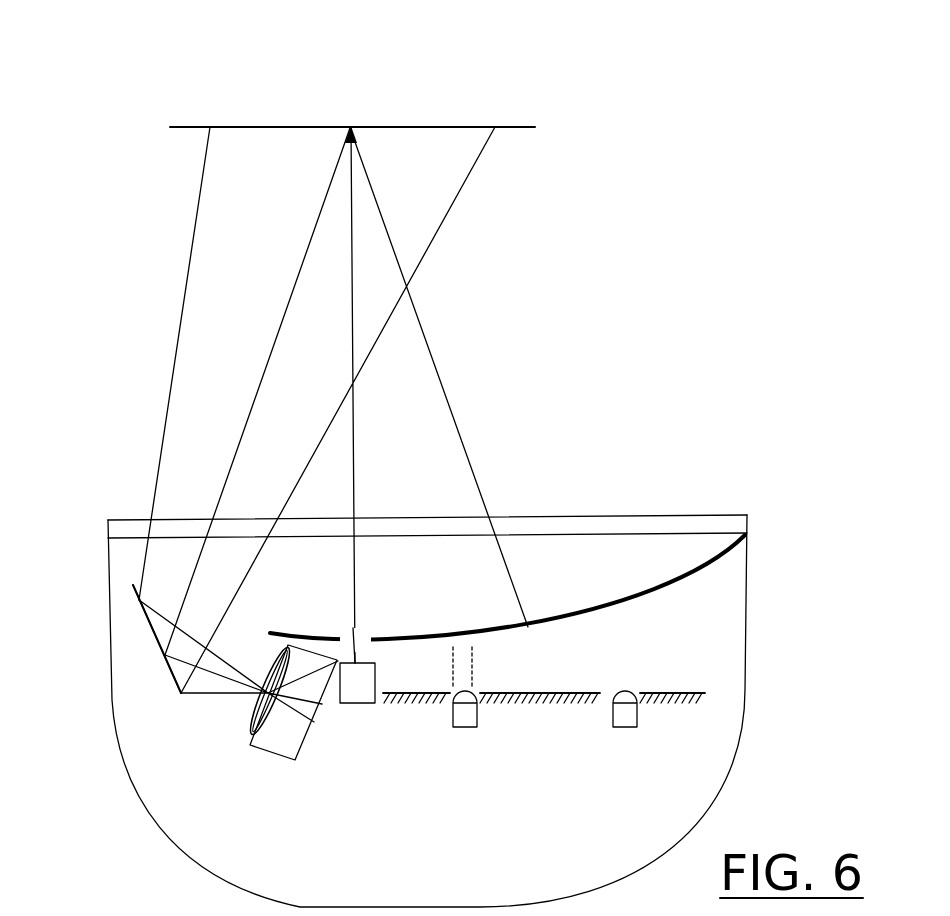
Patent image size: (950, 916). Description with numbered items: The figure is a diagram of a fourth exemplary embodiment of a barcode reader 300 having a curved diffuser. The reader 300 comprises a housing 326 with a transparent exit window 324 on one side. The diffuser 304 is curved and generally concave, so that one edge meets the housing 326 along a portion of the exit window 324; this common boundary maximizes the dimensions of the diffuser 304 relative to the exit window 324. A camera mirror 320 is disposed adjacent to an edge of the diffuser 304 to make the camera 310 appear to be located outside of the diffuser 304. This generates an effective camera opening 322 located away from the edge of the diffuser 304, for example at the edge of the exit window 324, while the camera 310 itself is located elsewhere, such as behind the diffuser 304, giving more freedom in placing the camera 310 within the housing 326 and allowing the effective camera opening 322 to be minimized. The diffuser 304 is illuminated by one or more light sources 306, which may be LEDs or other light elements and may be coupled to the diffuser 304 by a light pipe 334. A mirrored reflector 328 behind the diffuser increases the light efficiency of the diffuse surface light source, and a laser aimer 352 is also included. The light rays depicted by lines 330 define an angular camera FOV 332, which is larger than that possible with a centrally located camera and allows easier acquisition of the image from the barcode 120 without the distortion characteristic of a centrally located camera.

The barcode reader 300 is at (782, 144).
The barcode 120 is at (540, 130).
The angular camera FOV 332 is at (240, 186).
The light rays 330 is at (183, 289).
The transparent exit window 324 is at (560, 515).
The housing 326 is at (748, 617).
The effective camera opening 322 is at (153, 597).
The camera mirror 320 is at (155, 640).
The camera 310 is at (255, 748).
The laser aimer 352 is at (375, 704).
The diffuser 304 is at (641, 590).
The light pipe 334 is at (476, 648).
The mirrored reflector 328 is at (544, 702).
The light sources 306 is at (477, 727).